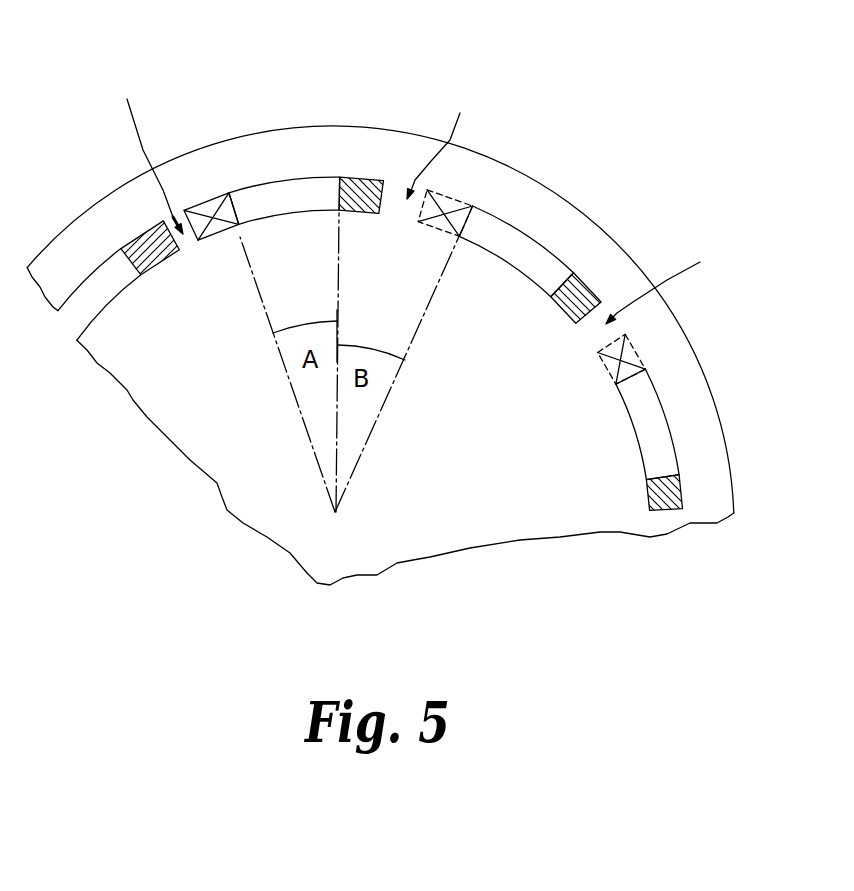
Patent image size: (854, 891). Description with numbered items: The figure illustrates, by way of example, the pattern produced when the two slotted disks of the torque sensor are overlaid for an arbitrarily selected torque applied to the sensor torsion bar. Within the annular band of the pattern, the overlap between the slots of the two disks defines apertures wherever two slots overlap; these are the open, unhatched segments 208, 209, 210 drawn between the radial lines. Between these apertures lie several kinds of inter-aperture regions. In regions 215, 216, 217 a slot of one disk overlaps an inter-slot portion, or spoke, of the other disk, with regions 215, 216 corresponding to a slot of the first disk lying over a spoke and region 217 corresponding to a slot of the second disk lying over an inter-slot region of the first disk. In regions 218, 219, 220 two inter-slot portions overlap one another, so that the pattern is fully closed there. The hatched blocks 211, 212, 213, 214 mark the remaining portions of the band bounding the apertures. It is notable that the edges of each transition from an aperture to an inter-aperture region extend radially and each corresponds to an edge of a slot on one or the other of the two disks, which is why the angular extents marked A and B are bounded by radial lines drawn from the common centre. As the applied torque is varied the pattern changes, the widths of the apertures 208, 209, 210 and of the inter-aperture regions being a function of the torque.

The pole segment 208 is at (277, 155).
The pole segment 209 is at (547, 212).
The pole segment 210 is at (697, 420).
The permanent magnet 211 is at (123, 198).
The permanent magnet 212 is at (367, 149).
The permanent magnet 213 is at (619, 272).
The permanent magnet 214 is at (716, 493).
The region where a slot of the first disk overlaps an inter-slot portion 215 is at (201, 144).
The region where a slot of the first disk overlaps an inter-slot portion 216 is at (499, 145).
The region where a slot of the second disk overlaps an inter-slot region 217 is at (640, 359).
The region where two inter-slot portions overlap 218 is at (146, 153).
The region where two inter-slot portions overlap 219 is at (448, 142).
The region where two inter-slot portions overlap 220 is at (674, 284).